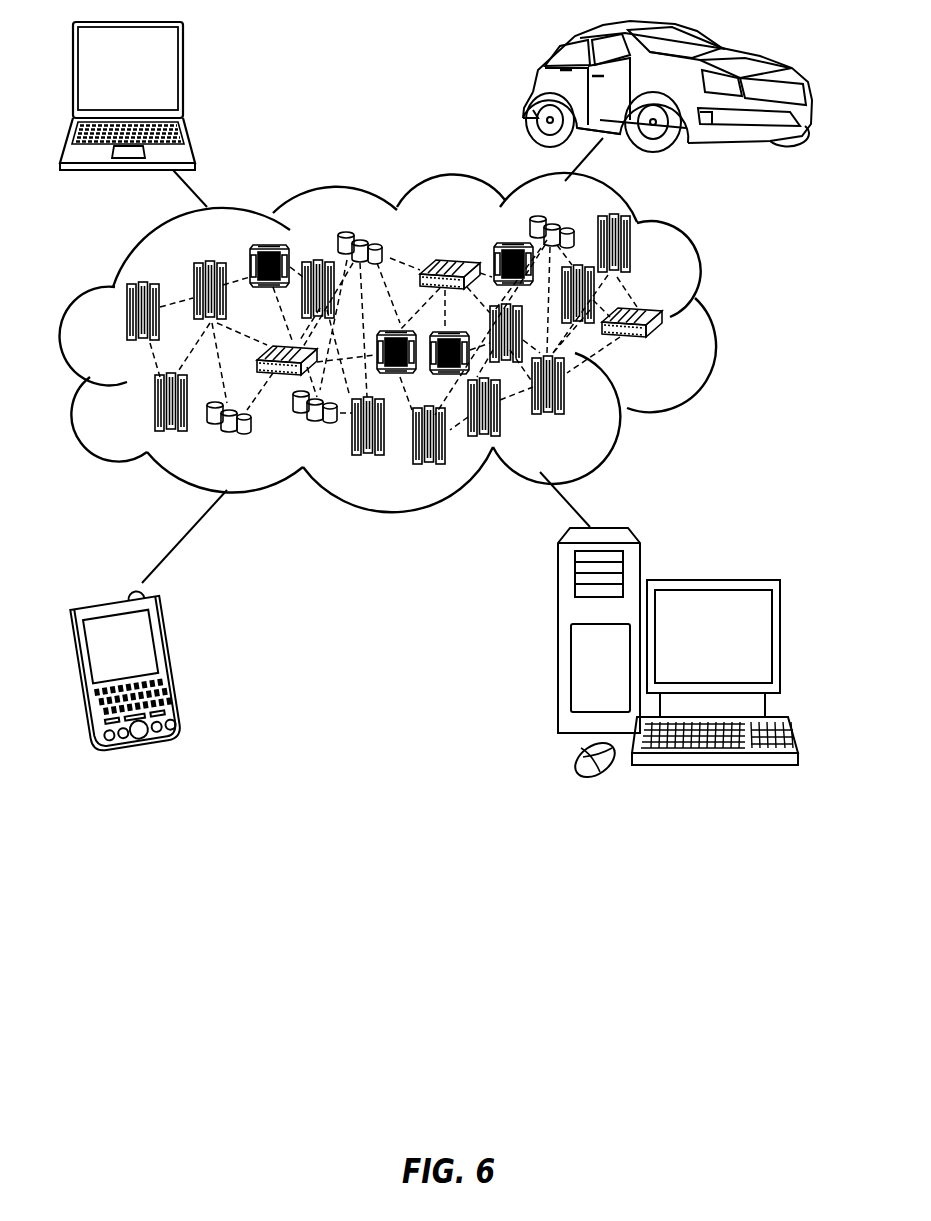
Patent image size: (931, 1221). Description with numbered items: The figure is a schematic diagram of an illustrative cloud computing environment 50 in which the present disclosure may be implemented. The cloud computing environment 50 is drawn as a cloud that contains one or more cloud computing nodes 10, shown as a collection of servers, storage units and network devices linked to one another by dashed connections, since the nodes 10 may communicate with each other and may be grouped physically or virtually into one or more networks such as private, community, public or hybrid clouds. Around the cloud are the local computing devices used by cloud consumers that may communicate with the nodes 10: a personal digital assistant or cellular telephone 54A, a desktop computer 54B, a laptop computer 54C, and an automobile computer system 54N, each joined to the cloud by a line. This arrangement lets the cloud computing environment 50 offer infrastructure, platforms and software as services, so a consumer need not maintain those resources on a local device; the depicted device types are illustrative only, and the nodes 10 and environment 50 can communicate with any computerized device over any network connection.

The cloud computing nodes 10 is at (664, 352).
The cloud computing environment 50 is at (708, 321).
The personal digital assistant or cellular telephone 54A is at (175, 666).
The desktop computer 54B is at (710, 580).
The laptop computer 54C is at (184, 78).
The automobile computer system 54N is at (533, 90).